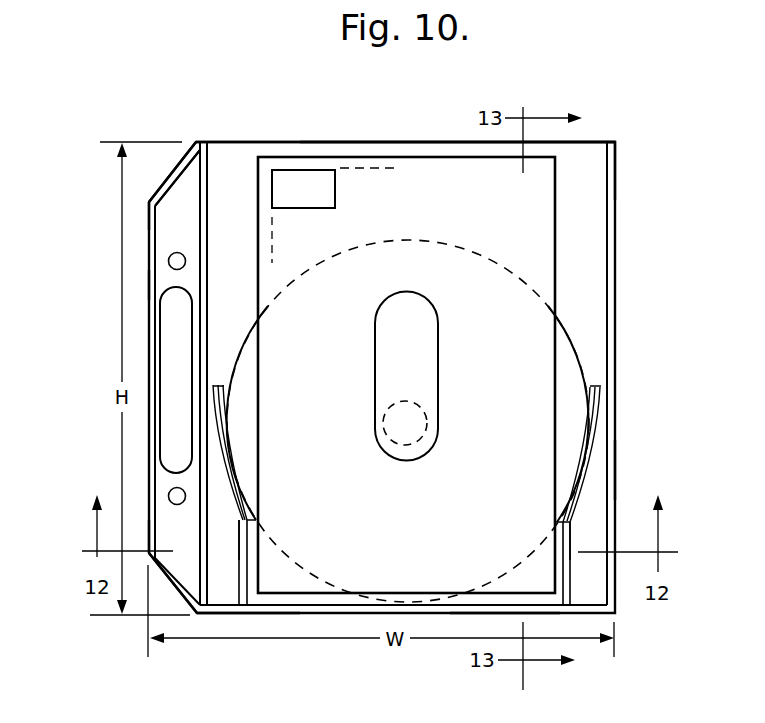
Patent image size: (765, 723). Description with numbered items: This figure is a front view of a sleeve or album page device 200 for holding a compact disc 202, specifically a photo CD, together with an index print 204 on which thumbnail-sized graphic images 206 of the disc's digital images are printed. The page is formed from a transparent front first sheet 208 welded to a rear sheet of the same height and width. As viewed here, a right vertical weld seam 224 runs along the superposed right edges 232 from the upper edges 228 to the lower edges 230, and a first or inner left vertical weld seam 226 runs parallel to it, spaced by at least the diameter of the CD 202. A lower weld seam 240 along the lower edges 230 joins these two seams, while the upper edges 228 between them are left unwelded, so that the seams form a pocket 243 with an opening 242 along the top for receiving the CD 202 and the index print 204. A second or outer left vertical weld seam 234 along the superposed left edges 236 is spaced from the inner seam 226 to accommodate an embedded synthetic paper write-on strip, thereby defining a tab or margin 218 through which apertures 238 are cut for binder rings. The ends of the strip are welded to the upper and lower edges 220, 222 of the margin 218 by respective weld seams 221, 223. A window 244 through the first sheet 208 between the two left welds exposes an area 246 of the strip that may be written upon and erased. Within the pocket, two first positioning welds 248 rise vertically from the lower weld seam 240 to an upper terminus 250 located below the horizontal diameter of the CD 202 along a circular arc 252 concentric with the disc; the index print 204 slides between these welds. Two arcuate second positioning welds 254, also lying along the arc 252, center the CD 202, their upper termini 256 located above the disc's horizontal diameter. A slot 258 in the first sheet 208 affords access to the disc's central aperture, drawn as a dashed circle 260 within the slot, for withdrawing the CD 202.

The album page device 200 is at (532, 141).
The compact disc 202 is at (572, 340).
The index print 204 is at (563, 223).
The graphic images 206 is at (325, 192).
The first sheet 208 is at (218, 165).
The margin 218 is at (185, 198).
The upper edge of margin 220 is at (180, 160).
The weld seam 221 is at (152, 193).
The lower edge of margin 222 is at (148, 542).
The weld seam 223 is at (187, 604).
The right vertical weld seam 224 is at (617, 482).
The first left vertical weld seam 226 is at (210, 190).
The upper edges 228 is at (597, 139).
The lower edges 230 is at (508, 620).
The right edges 232 is at (617, 515).
The second left vertical weld seam 234 is at (153, 259).
The left edges 236 is at (150, 285).
The apertures 238 is at (168, 260).
The lower weld seam 240 is at (252, 618).
The opening 242 is at (358, 142).
The pocket 243 is at (426, 140).
The window 244 is at (160, 305).
The exposed area 246 is at (168, 353).
The first positioning welds 248 is at (237, 568).
The upper terminus 250 is at (237, 520).
The circular arc 252 is at (200, 462).
The second positioning welds 254 is at (218, 420).
The upper termini 256 is at (218, 383).
The slot 258 is at (438, 340).
The hub opening 260 is at (400, 401).